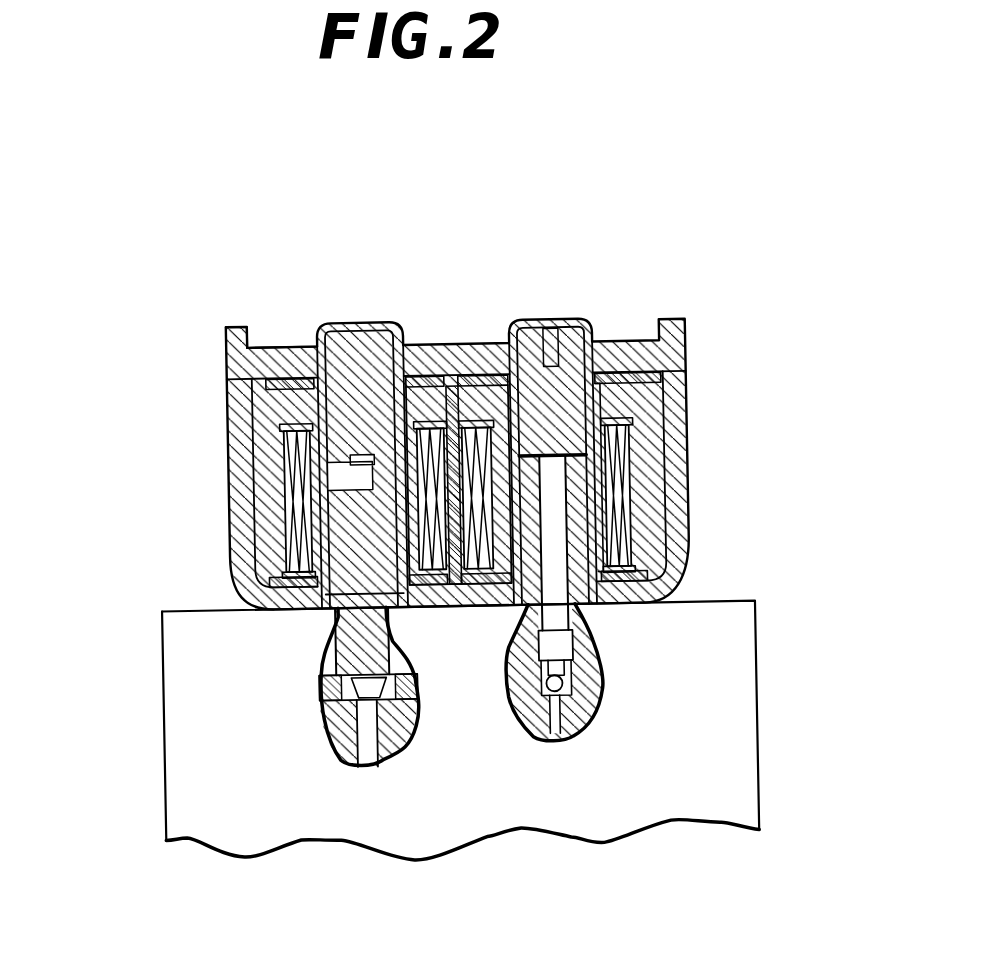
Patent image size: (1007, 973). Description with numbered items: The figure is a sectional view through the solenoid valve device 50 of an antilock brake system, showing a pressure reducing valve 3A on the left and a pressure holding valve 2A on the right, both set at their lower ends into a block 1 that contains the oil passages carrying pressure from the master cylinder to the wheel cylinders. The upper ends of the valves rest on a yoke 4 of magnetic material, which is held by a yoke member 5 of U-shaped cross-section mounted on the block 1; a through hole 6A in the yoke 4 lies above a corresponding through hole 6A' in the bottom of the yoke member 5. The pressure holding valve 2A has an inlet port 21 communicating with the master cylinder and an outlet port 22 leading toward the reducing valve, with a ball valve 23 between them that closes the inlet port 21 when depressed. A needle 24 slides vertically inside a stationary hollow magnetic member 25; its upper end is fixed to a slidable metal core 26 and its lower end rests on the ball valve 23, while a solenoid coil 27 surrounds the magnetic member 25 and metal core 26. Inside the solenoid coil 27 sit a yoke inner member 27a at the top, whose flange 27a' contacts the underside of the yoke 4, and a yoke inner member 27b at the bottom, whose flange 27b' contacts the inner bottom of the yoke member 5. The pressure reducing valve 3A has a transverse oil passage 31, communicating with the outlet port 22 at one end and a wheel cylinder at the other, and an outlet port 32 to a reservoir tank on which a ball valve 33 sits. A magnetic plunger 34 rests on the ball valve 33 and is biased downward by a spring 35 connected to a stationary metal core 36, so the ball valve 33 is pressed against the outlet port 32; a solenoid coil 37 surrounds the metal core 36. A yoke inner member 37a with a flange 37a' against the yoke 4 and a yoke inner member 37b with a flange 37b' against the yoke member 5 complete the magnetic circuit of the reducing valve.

The block 1 is at (188, 711).
The pressure holding valve 2A is at (546, 304).
The pressure reducing valve 3A is at (355, 301).
The yoke 4 is at (275, 342).
The yoke member 5 is at (244, 493).
The through hole 6A is at (458, 431).
The through hole 6A' is at (461, 625).
The inlet port 21 is at (557, 750).
The outlet port 22 is at (538, 691).
The ball valve 23 is at (584, 682).
The needle 24 is at (558, 497).
The hollow magnetic member 25 is at (601, 533).
The metal core 26 is at (574, 326).
The solenoid coil 27 is at (631, 443).
The yoke inner member 27a is at (693, 373).
The flange 27a' is at (654, 328).
The yoke inner member 27b is at (693, 563).
The flange 27b' is at (658, 621).
The transverse oil passage 31 is at (330, 685).
The outlet port 32 is at (369, 762).
The ball valve 33 is at (331, 733).
The plunger 34 is at (322, 610).
The spring 35 is at (355, 466).
The metal core 36 is at (388, 320).
The solenoid coil 37 is at (293, 549).
The yoke inner member 37a is at (202, 408).
The flange 37a' is at (201, 387).
The yoke inner member 37b is at (203, 546).
The flange 37b' is at (187, 597).
The solenoid valve device 50 is at (700, 348).